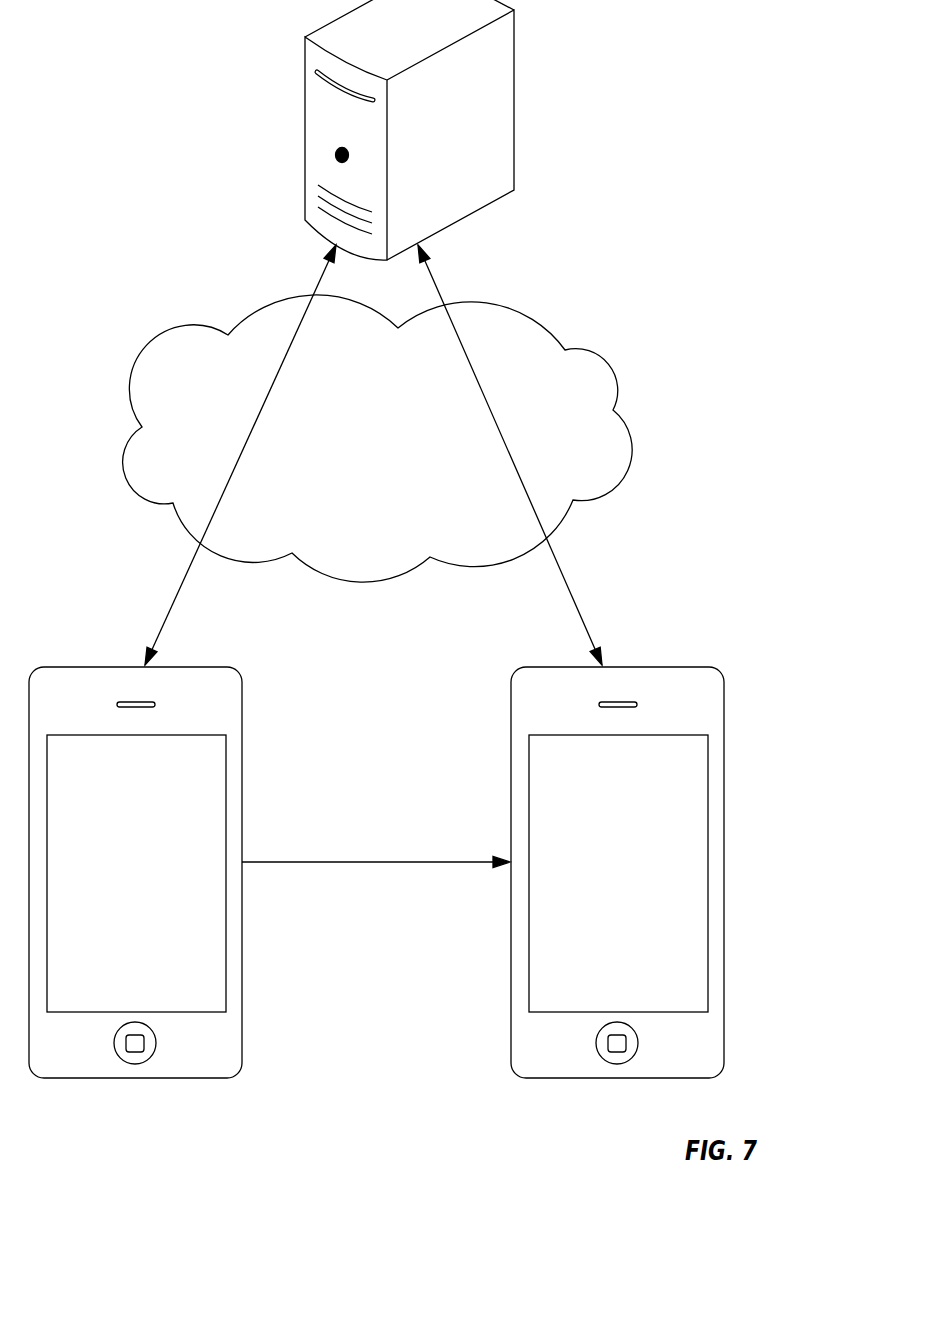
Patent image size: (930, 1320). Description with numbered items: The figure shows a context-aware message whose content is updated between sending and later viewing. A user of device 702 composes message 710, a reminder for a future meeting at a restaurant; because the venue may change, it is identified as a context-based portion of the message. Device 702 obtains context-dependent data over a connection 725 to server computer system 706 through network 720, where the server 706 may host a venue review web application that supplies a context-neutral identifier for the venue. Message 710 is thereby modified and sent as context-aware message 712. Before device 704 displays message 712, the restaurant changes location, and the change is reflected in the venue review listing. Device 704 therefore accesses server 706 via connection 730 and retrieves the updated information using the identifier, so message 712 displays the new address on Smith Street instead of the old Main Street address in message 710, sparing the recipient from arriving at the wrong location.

The device 702 is at (205, 665).
The device 704 is at (673, 665).
The server computer system 706 is at (516, 67).
The message 710 is at (103, 923).
The context-aware message 712 is at (345, 863).
The network 720 is at (377, 438).
The connection 725 is at (240, 455).
The connection 730 is at (508, 458).